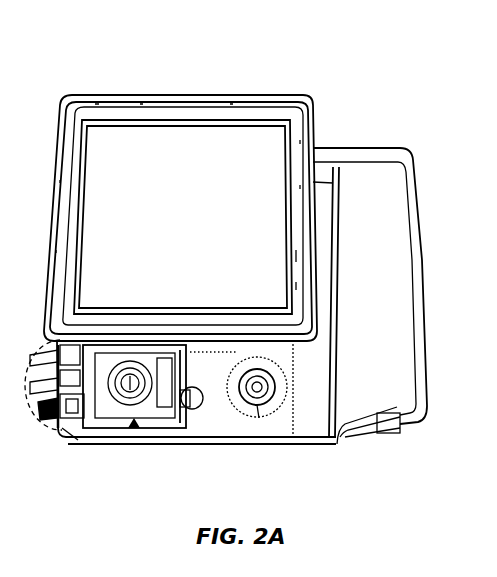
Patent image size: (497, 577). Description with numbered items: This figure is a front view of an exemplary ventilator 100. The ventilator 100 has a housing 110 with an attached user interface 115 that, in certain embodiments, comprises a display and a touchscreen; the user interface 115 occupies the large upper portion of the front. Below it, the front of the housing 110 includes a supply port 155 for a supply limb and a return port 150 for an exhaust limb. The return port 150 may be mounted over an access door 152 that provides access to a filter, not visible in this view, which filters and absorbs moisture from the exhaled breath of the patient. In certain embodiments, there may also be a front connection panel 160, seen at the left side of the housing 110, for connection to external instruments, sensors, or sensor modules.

The ventilator 100 is at (207, 55).
The housing 110 is at (377, 197).
The user interface 115 is at (127, 167).
The return port 150 is at (135, 430).
The access door 152 is at (160, 417).
The supply port 155 is at (258, 420).
The front connection panel 160 is at (65, 432).